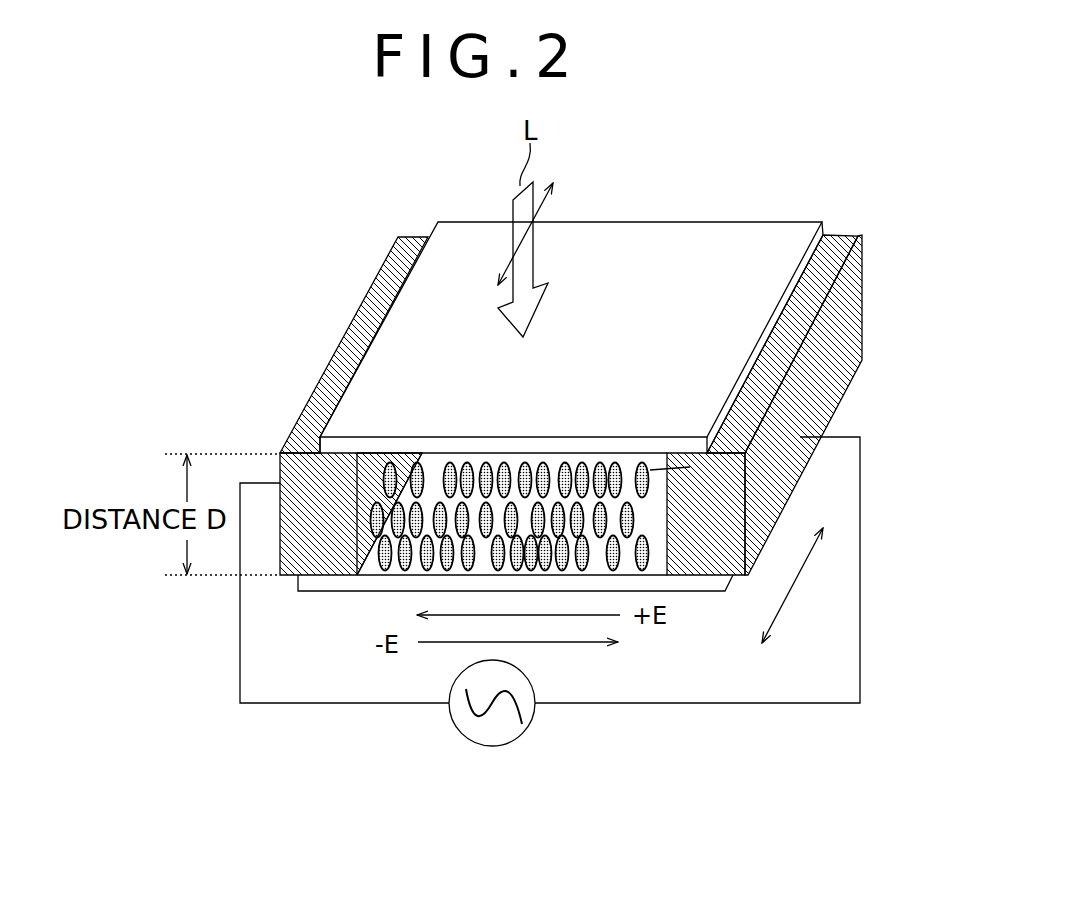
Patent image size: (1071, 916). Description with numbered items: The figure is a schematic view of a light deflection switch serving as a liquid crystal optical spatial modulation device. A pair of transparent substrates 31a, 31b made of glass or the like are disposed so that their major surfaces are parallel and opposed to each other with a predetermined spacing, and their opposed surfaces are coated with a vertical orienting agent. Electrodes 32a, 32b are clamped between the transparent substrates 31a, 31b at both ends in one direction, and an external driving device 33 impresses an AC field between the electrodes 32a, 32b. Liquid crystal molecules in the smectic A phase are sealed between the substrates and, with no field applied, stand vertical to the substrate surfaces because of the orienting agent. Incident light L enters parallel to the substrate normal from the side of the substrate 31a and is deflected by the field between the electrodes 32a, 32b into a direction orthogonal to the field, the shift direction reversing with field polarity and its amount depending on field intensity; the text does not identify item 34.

The transparent substrate 31a is at (678, 245).
The transparent substrate 31b is at (703, 580).
The electrode 32a is at (732, 553).
The electrode 32b is at (307, 557).
The external driving device 33 is at (492, 747).
The electric field direction 34 is at (750, 488).